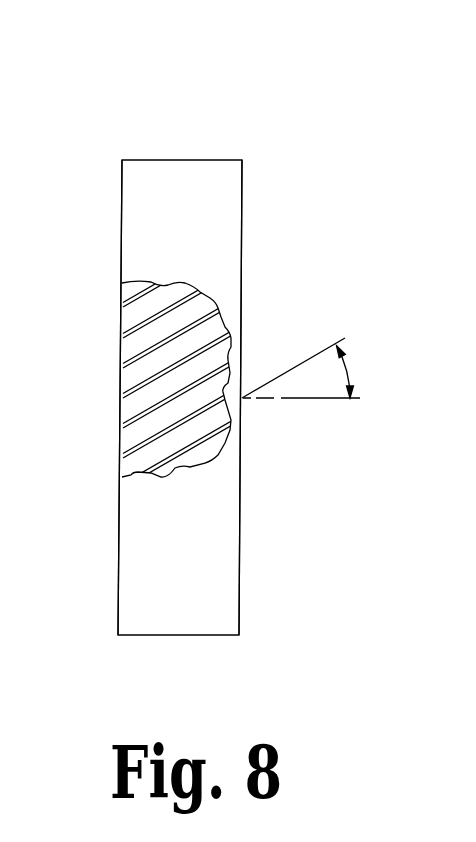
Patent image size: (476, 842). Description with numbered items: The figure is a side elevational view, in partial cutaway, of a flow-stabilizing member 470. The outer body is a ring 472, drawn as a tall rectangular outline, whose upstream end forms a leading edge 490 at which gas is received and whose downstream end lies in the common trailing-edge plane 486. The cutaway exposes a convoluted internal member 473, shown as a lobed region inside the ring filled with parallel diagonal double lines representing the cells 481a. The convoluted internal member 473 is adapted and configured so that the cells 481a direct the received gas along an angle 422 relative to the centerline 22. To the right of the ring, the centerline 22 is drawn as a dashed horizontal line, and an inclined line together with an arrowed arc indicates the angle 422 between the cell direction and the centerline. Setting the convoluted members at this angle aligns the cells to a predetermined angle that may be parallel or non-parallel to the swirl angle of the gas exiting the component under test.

The flow-stabilizing member 470 is at (222, 78).
The ring 472 is at (140, 223).
The convoluted internal member 473 is at (140, 362).
The cell 481a is at (138, 407).
The leading edge 490 is at (118, 583).
The trailing edge plane 486 is at (238, 580).
The centerline 22 is at (280, 400).
The angle 422 is at (348, 370).